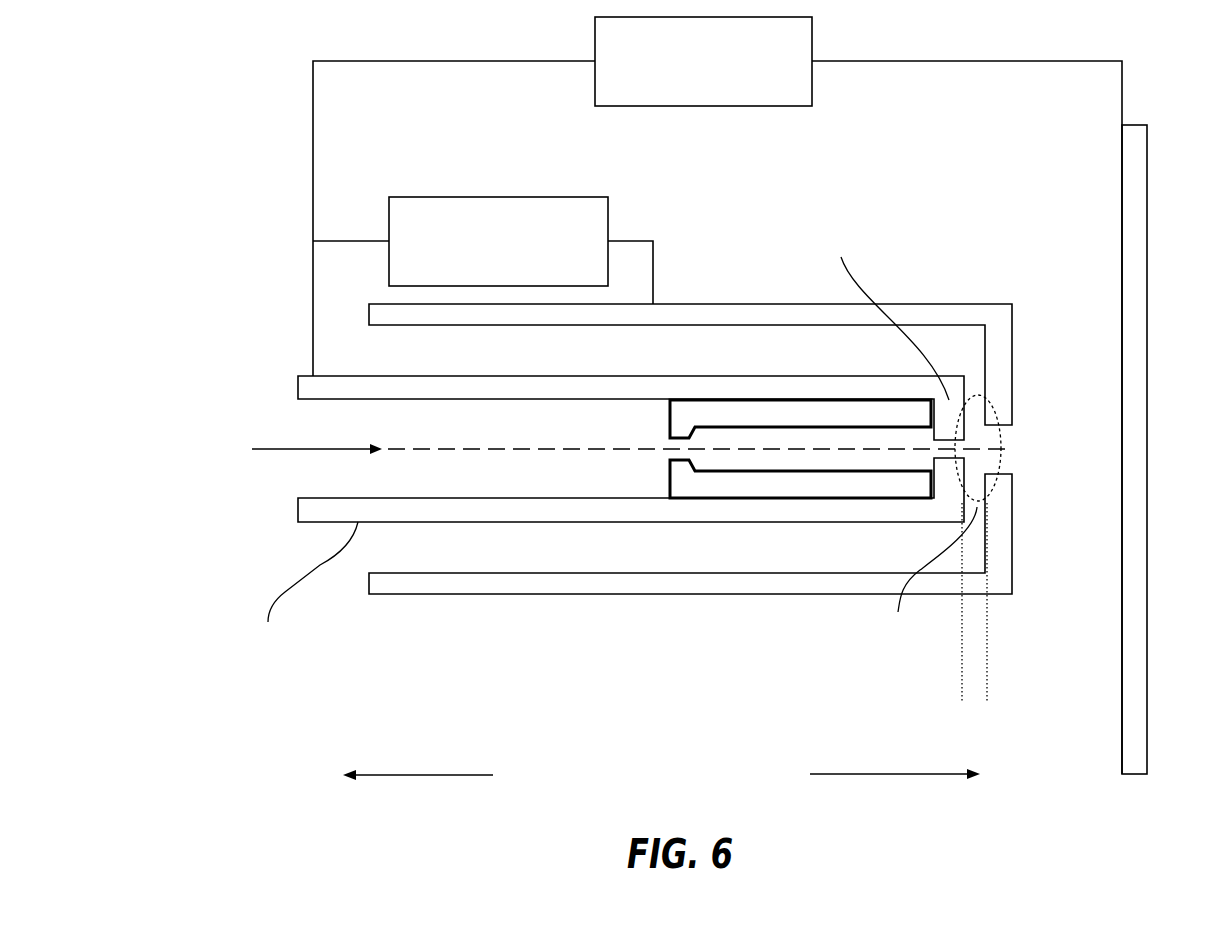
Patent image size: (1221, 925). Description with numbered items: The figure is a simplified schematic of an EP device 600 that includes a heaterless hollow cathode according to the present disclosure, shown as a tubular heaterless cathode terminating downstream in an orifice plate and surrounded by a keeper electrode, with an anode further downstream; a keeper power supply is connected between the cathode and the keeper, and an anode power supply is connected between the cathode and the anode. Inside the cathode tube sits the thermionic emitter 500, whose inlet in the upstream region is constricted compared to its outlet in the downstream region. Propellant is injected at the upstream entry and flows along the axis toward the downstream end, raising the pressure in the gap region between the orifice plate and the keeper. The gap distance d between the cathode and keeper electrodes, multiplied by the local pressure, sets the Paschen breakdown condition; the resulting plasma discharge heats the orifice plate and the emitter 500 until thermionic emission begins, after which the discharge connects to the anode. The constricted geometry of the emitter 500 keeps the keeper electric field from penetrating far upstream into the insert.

The EP device 600 is at (178, 133).
The thermionic emitter 500 is at (718, 483).
The distance between the cathode and keeper electrodes d is at (1035, 682).